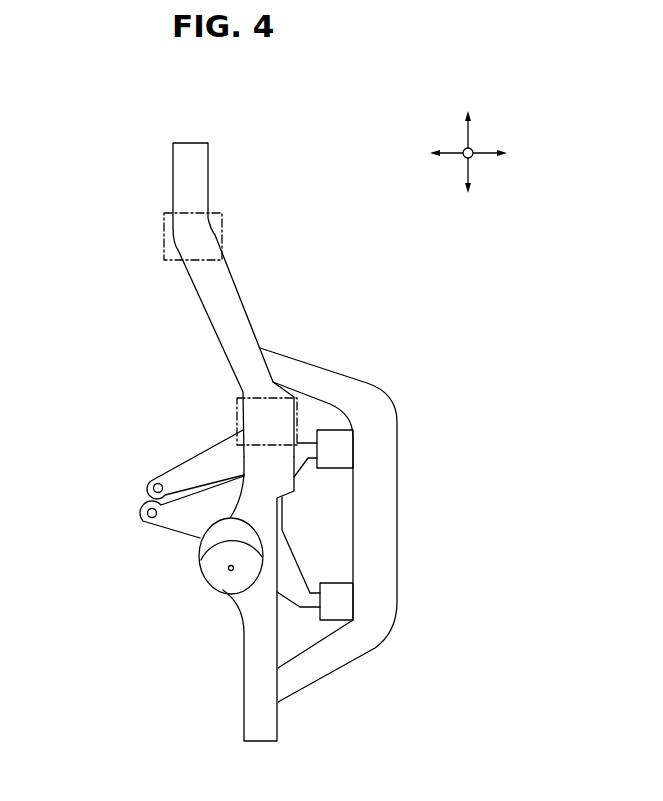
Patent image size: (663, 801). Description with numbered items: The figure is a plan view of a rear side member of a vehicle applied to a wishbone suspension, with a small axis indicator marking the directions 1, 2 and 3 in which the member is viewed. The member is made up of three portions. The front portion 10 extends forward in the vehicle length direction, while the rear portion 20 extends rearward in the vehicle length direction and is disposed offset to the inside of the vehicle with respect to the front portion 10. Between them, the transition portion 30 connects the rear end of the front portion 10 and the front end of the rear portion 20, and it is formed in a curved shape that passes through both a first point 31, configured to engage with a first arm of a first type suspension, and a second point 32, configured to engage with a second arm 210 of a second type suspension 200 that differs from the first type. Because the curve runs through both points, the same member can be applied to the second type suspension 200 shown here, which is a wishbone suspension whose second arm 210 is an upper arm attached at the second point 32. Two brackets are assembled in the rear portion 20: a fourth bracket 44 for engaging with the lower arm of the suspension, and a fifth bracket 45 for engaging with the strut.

The first direction axis 1 is at (468, 122).
The second direction axis 2 is at (496, 154).
The third direction axis 3 is at (457, 163).
The front portion 10 is at (58, 142).
The rear portion 20 is at (58, 457).
The transition portion 30 is at (58, 262).
The first point 31 is at (222, 236).
The second point 32 is at (298, 422).
The fourth bracket 44 is at (390, 527).
The fifth bracket 45 is at (217, 580).
The second type suspension 200 is at (180, 508).
The second arm 210 is at (212, 460).